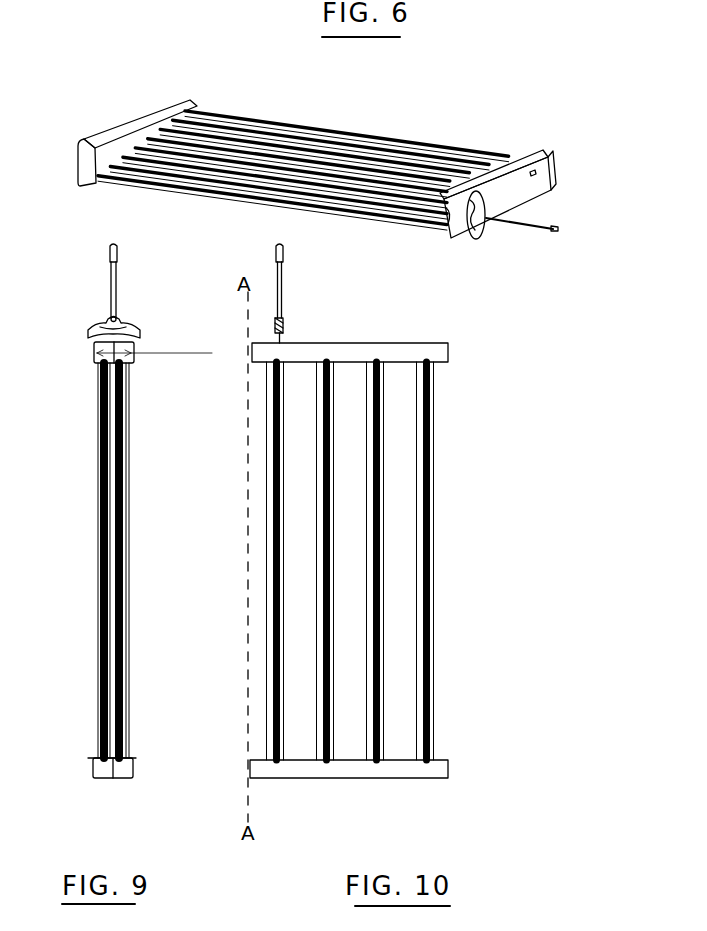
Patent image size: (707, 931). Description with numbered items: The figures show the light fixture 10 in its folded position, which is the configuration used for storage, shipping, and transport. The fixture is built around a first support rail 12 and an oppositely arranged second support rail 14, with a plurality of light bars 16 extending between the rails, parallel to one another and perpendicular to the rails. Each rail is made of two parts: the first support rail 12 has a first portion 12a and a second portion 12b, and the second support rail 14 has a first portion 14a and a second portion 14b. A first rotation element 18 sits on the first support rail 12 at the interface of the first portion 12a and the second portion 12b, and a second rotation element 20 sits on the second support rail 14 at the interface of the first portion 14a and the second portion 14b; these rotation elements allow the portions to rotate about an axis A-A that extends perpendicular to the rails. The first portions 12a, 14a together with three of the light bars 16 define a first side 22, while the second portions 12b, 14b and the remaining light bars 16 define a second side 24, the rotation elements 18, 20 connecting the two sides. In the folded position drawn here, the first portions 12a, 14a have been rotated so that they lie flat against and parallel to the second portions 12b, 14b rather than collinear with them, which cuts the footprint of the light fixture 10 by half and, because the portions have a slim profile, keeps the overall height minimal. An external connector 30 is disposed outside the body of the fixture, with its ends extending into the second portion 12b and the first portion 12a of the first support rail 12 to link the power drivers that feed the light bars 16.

In FIG. 6, the light fixture 10 is at (578, 70).
In FIG. 9, the light fixture 10 is at (50, 806).
In FIG. 10, the light fixture 10 is at (628, 466).
In FIG. 6, the first support rail 12 is at (556, 168).
In FIG. 10, the first support rail 12 is at (449, 353).
In FIG. 6, the first portion of the first support rail 12a is at (530, 160).
In FIG. 9, the first portion of the first support rail 12a is at (95, 364).
In FIG. 6, the second portion of the first support rail 12b is at (537, 200).
In FIG. 9, the second portion of the first support rail 12b is at (134, 350).
In FIG. 10, the second portion of the first support rail 12b is at (350, 352).
In FIG. 6, the second support rail 14 is at (190, 100).
In FIG. 10, the second support rail 14 is at (450, 769).
In FIG. 6, the first portion of the second support rail 14a is at (137, 118).
In FIG. 9, the first portion of the second support rail 14a is at (92, 770).
In FIG. 6, the second portion of the second support rail 14b is at (92, 178).
In FIG. 9, the second portion of the second support rail 14b is at (135, 770).
In FIG. 10, the second portion of the second support rail 14b is at (360, 773).
In FIG. 6, the light bars 16 is at (248, 194).
In FIG. 9, the light bars 16 is at (127, 645).
In FIG. 10, the light bars 16 is at (434, 500).
In FIG. 6, the first rotation element 18 is at (450, 226).
In FIG. 9, the first rotation element 18 is at (106, 361).
In FIG. 10, the first rotation element 18 is at (252, 363).
In FIG. 6, the second rotation element 20 is at (78, 160).
In FIG. 9, the second rotation element 20 is at (100, 749).
In FIG. 10, the second rotation element 20 is at (251, 776).
In FIG. 6, the first side 22 is at (282, 124).
In FIG. 9, the first side 22 is at (100, 547).
In FIG. 6, the second side 24 is at (468, 240).
In FIG. 9, the second side 24 is at (128, 462).
In FIG. 10, the second side 24 is at (405, 572).
In FIG. 6, the external connector 30 is at (505, 224).
In FIG. 9, the external connector 30 is at (120, 280).
In FIG. 10, the external connector 30 is at (284, 288).